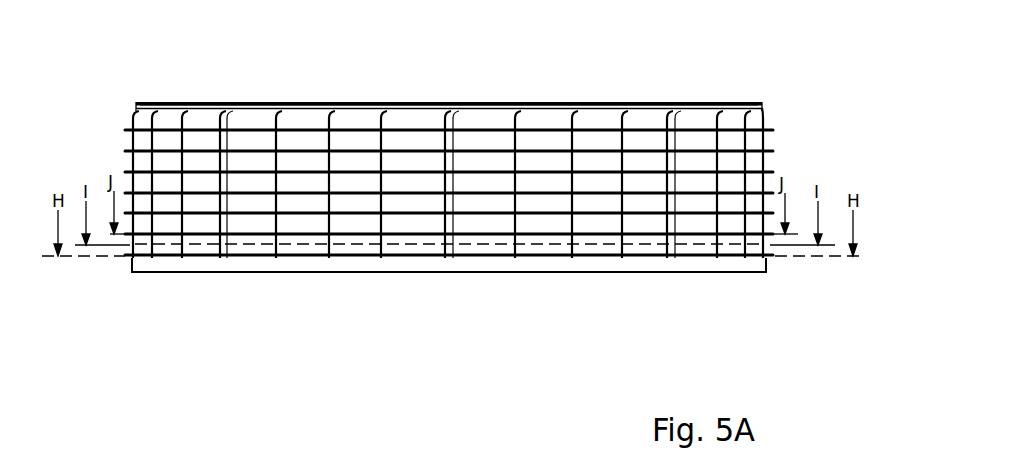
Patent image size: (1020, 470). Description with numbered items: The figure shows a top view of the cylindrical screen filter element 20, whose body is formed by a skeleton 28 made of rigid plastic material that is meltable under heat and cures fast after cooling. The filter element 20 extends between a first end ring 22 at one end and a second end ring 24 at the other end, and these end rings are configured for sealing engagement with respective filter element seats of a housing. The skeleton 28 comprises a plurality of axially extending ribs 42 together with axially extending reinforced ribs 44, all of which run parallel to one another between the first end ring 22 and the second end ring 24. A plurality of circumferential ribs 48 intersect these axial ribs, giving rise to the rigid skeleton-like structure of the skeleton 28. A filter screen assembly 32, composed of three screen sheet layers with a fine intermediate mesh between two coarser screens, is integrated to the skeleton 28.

The filter element 20 is at (252, 74).
The first end ring 22 is at (752, 273).
The second end ring 24 is at (762, 103).
The skeleton 28 is at (432, 104).
The filter screen assembly 32 is at (543, 180).
The axially extending ribs 42 is at (329, 255).
The axially extending reinforced ribs 44 is at (449, 258).
The circumferential ribs 48 is at (773, 172).